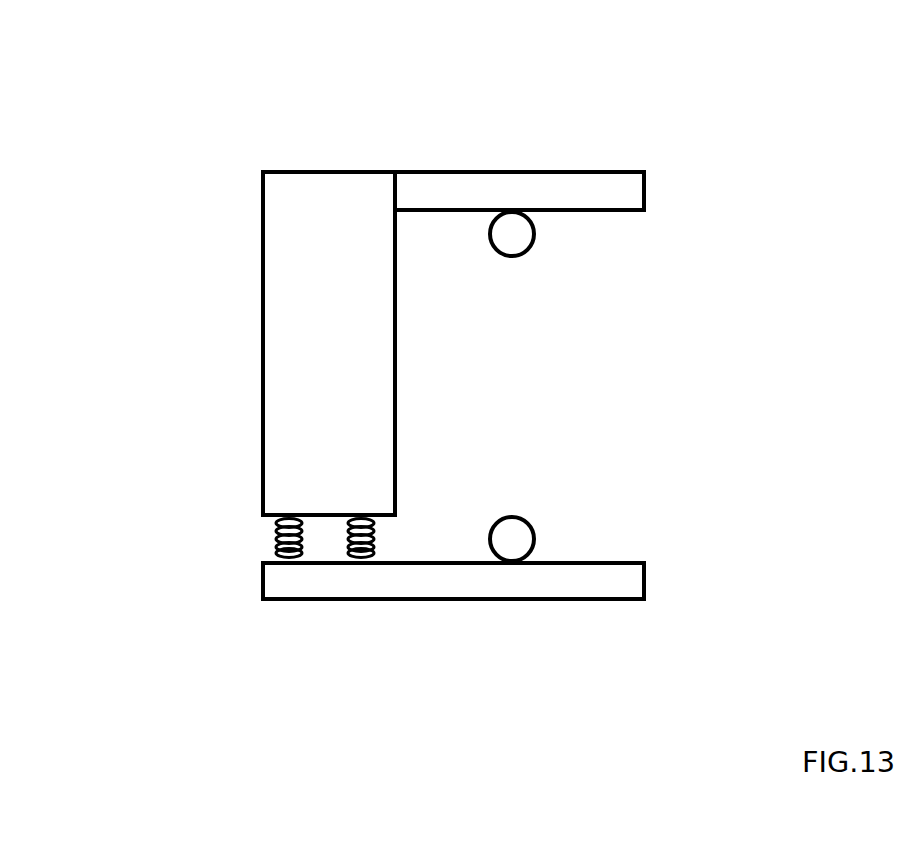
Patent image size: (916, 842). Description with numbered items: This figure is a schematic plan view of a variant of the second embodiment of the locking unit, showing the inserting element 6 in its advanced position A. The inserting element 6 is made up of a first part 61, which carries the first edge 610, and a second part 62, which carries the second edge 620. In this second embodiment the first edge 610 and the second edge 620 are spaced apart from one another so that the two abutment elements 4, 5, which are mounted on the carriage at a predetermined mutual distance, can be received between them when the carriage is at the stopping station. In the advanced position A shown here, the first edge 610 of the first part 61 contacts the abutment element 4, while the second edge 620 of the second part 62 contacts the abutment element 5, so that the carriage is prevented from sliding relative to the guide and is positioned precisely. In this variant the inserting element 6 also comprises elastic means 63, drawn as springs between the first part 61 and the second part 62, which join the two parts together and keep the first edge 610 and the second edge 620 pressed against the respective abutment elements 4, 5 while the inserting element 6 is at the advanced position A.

The advanced position A is at (263, 143).
The inserting element 6 is at (195, 363).
The first part 61 is at (467, 167).
The first edge 610 is at (598, 213).
The abutment element 4 is at (517, 243).
The abutment element 5 is at (504, 547).
The second part 62 is at (568, 608).
The second edge 620 is at (622, 557).
The elastic means 63 is at (277, 540).